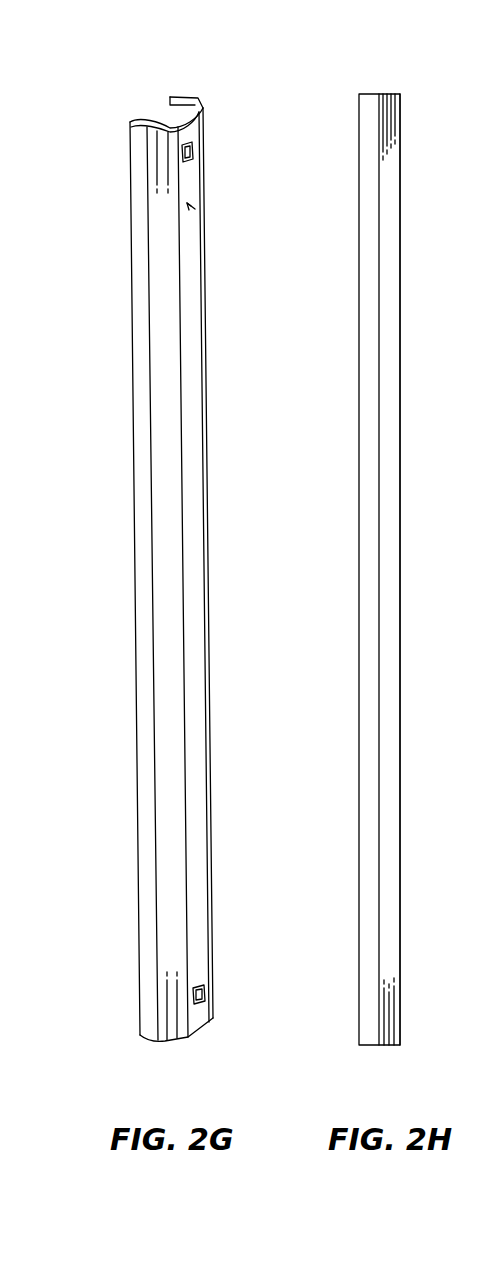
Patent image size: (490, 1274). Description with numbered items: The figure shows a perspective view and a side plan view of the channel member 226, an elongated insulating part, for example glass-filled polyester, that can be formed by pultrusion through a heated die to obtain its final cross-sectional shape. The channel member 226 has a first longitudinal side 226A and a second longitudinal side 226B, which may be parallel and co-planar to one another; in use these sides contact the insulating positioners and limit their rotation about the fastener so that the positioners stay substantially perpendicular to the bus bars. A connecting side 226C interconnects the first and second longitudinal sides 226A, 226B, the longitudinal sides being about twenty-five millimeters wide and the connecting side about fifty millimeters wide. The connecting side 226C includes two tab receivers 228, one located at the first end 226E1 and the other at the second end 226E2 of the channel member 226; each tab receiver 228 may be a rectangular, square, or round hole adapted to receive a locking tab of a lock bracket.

In FIG. 2G, the channel member 226 is at (144, 56).
In FIG. 2H, the channel member 226 is at (388, 48).
In FIG. 2G, the first longitudinal side 226A is at (178, 96).
In FIG. 2G, the second longitudinal side 226B is at (130, 203).
In FIG. 2H, the second longitudinal side 226B is at (373, 370).
In FIG. 2G, the connecting side 226C is at (195, 209).
In FIG. 2H, the connecting side 226C is at (400, 200).
In FIG. 2G, the first end 226E1 is at (136, 93).
In FIG. 2H, the first end 226E1 is at (364, 83).
In FIG. 2G, the second end 226E2 is at (163, 1058).
In FIG. 2H, the second end 226E2 is at (363, 1060).
In FIG. 2G, the tab receiver 228 is at (195, 147).